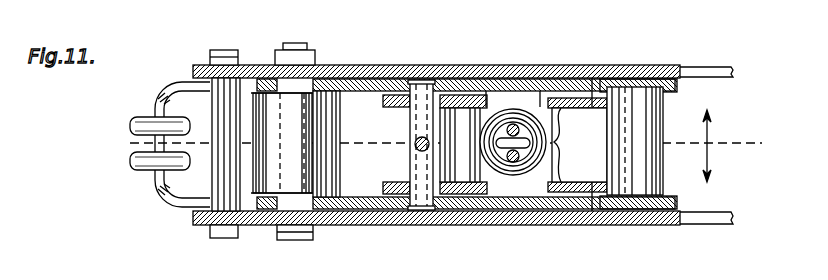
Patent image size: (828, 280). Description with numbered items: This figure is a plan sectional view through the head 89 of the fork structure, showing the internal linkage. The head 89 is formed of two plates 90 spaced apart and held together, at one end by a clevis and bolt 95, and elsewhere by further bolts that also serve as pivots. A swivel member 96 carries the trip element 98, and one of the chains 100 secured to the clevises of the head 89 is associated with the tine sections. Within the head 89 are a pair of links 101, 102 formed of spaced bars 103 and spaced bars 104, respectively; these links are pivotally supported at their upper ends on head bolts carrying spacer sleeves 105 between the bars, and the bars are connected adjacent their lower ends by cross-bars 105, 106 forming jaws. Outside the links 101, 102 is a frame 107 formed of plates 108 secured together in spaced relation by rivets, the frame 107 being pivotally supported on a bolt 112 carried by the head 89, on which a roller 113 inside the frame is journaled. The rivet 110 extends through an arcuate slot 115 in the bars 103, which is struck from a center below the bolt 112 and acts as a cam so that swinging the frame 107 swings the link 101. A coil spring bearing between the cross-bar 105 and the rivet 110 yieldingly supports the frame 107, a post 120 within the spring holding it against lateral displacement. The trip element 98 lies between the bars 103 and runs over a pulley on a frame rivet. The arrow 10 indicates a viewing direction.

The direction arrow / axis 10 is at (710, 144).
The head 89 is at (406, 64).
The plates 90 is at (392, 66).
The bolt 95 is at (223, 48).
The swivel member 96 is at (522, 172).
The trip element 98 is at (538, 70).
The chain 100 is at (133, 147).
The link 101 is at (335, 64).
The link 102 is at (583, 98).
The bars 103 is at (332, 80).
The bars 104 is at (579, 145).
The spacer sleeves 105 is at (512, 136).
The cross-bar 106 is at (578, 145).
The frame 107 is at (471, 84).
The plates 108 is at (513, 124).
The rivet 110 is at (418, 128).
The bolt 112 is at (290, 43).
The roller 113 is at (282, 143).
The arcuate slot 115 is at (452, 238).
The post 120 is at (416, 146).